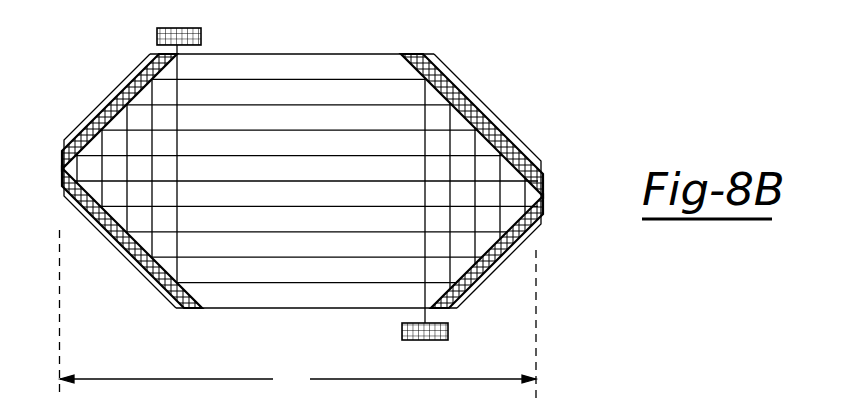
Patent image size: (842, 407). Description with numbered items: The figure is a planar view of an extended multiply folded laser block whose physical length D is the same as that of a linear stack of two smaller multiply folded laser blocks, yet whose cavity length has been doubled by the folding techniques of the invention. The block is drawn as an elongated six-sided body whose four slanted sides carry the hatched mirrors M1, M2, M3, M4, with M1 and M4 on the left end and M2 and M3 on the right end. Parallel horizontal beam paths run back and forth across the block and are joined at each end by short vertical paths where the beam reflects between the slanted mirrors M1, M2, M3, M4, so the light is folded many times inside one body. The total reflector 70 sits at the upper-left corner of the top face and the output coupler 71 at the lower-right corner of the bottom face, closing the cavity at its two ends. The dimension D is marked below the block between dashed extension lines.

The first mirror M1 is at (118, 92).
The second mirror M2 is at (460, 87).
The third mirror M3 is at (502, 253).
The fourth mirror M4 is at (122, 252).
The total reflector 70 is at (179, 29).
The output coupler 71 is at (425, 336).
The physical length D is at (298, 314).